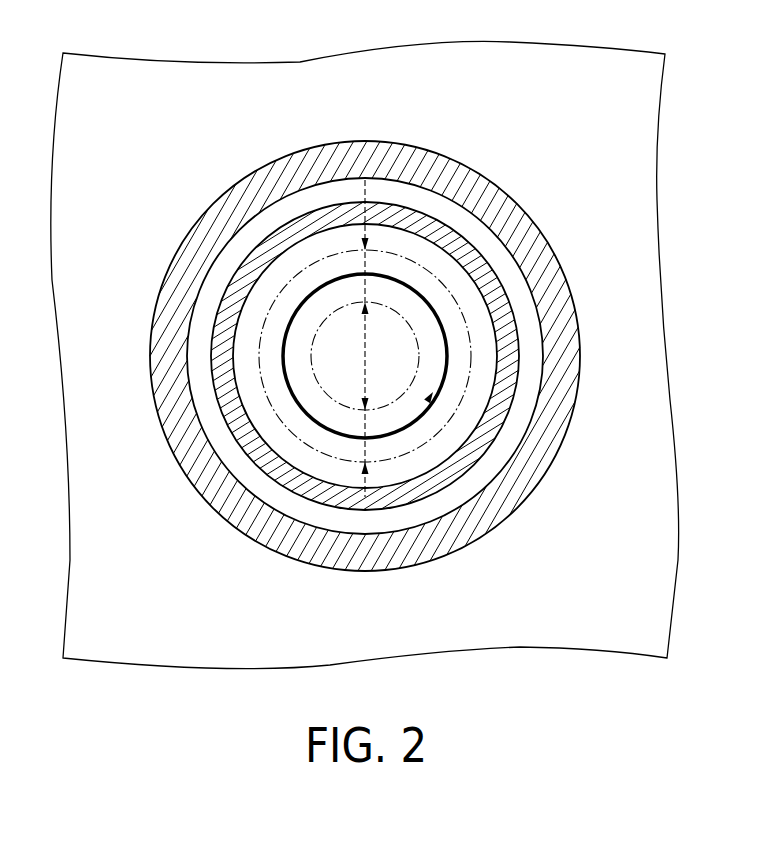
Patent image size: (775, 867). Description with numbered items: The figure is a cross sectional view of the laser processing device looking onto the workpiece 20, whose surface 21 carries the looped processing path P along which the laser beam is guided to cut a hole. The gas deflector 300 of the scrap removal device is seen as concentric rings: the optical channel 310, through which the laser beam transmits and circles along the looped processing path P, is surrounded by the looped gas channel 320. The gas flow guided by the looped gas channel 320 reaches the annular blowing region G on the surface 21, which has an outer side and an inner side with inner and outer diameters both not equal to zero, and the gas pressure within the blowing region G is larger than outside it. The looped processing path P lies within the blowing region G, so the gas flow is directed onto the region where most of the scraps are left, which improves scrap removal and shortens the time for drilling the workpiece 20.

The workpiece 20 is at (645, 112).
The surface 21 is at (640, 165).
The gas deflector 300 is at (373, 324).
The optical channel 310 is at (262, 268).
The looped gas channel 320 is at (365, 178).
The looped processing path P is at (440, 322).
The blowing region G is at (472, 355).